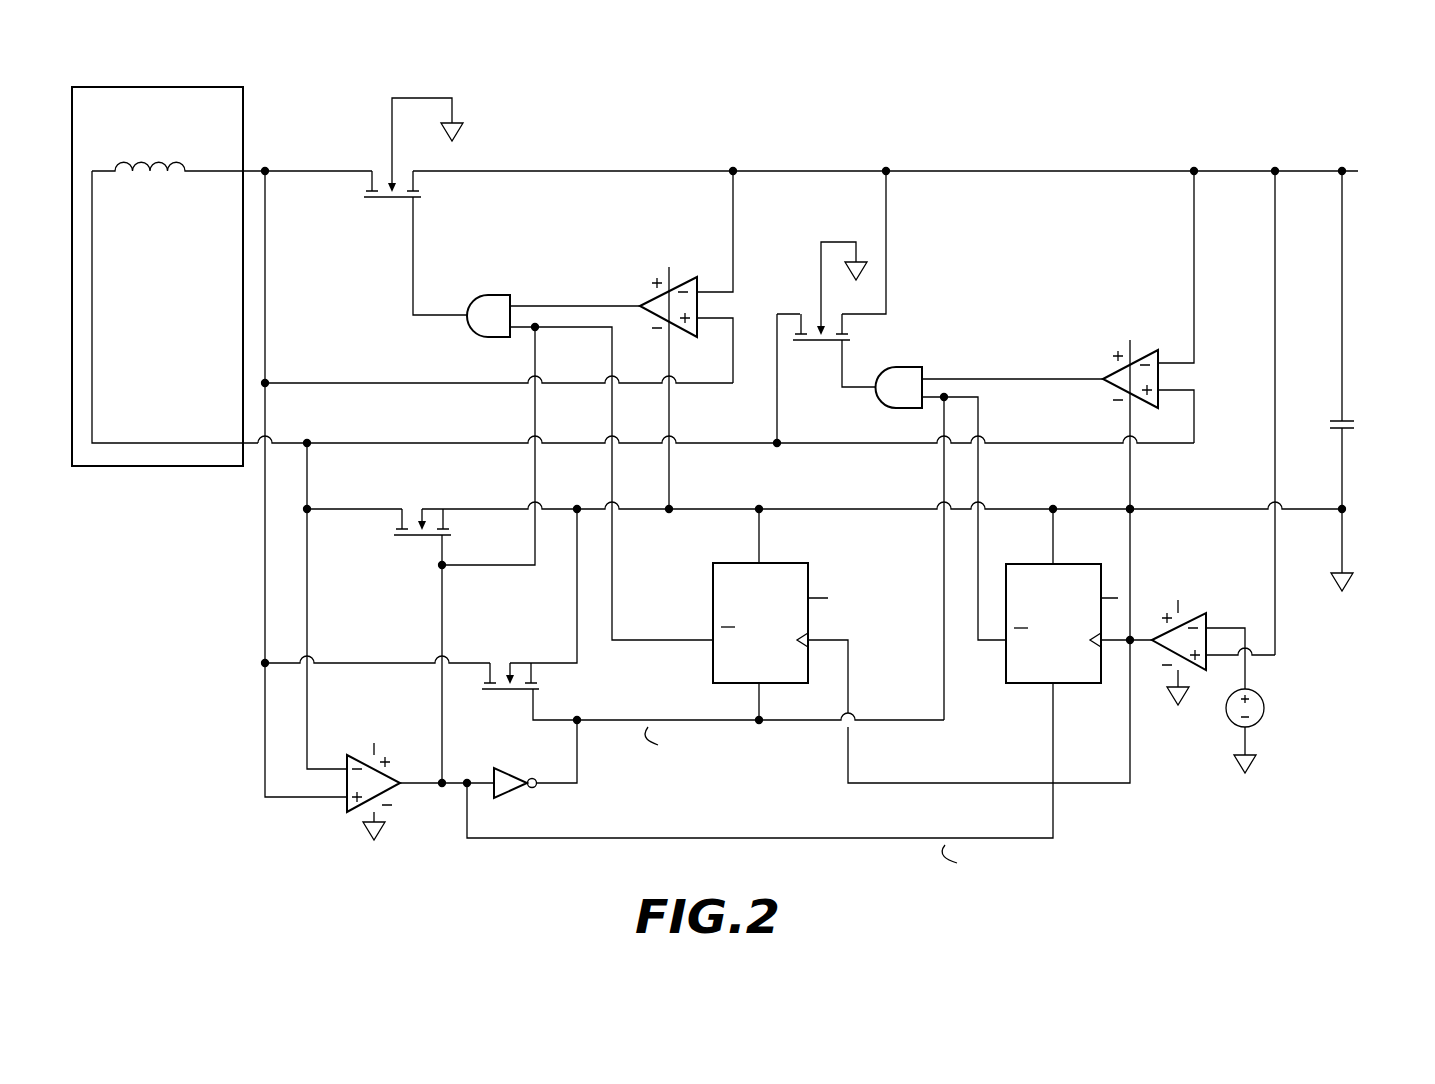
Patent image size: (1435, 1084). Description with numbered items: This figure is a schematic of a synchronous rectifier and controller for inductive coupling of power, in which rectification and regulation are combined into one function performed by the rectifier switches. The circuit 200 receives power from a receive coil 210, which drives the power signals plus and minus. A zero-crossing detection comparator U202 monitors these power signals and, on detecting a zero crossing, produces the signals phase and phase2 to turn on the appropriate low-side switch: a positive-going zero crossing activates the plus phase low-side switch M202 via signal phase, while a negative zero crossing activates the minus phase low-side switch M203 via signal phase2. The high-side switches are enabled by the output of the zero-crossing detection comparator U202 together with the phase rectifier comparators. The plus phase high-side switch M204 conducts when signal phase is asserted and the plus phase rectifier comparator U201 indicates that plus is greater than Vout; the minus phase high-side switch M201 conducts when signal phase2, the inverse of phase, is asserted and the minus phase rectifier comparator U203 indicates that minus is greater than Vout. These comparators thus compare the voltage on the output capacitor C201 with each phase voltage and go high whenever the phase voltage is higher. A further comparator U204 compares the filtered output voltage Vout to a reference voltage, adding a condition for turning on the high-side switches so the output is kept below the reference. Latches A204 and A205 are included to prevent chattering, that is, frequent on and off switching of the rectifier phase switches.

The circuit 200 is at (831, 473).
The receive coil 210 is at (257, 124).
The minus phase high-side switch M201 is at (831, 307).
The plus phase low-side switch M202 is at (417, 648).
The minus phase low-side switch M203 is at (604, 616).
The plus phase high-side switch M204 is at (412, 206).
The plus phase rectifier comparator U201 is at (686, 340).
The zero-crossing detection comparator U202 is at (345, 778).
The minus phase rectifier comparator U203 is at (1001, 477).
The comparator U204 is at (1213, 472).
The latch A204 is at (789, 614).
The latch A205 is at (1079, 596).
The output capacitor C201 is at (1347, 381).